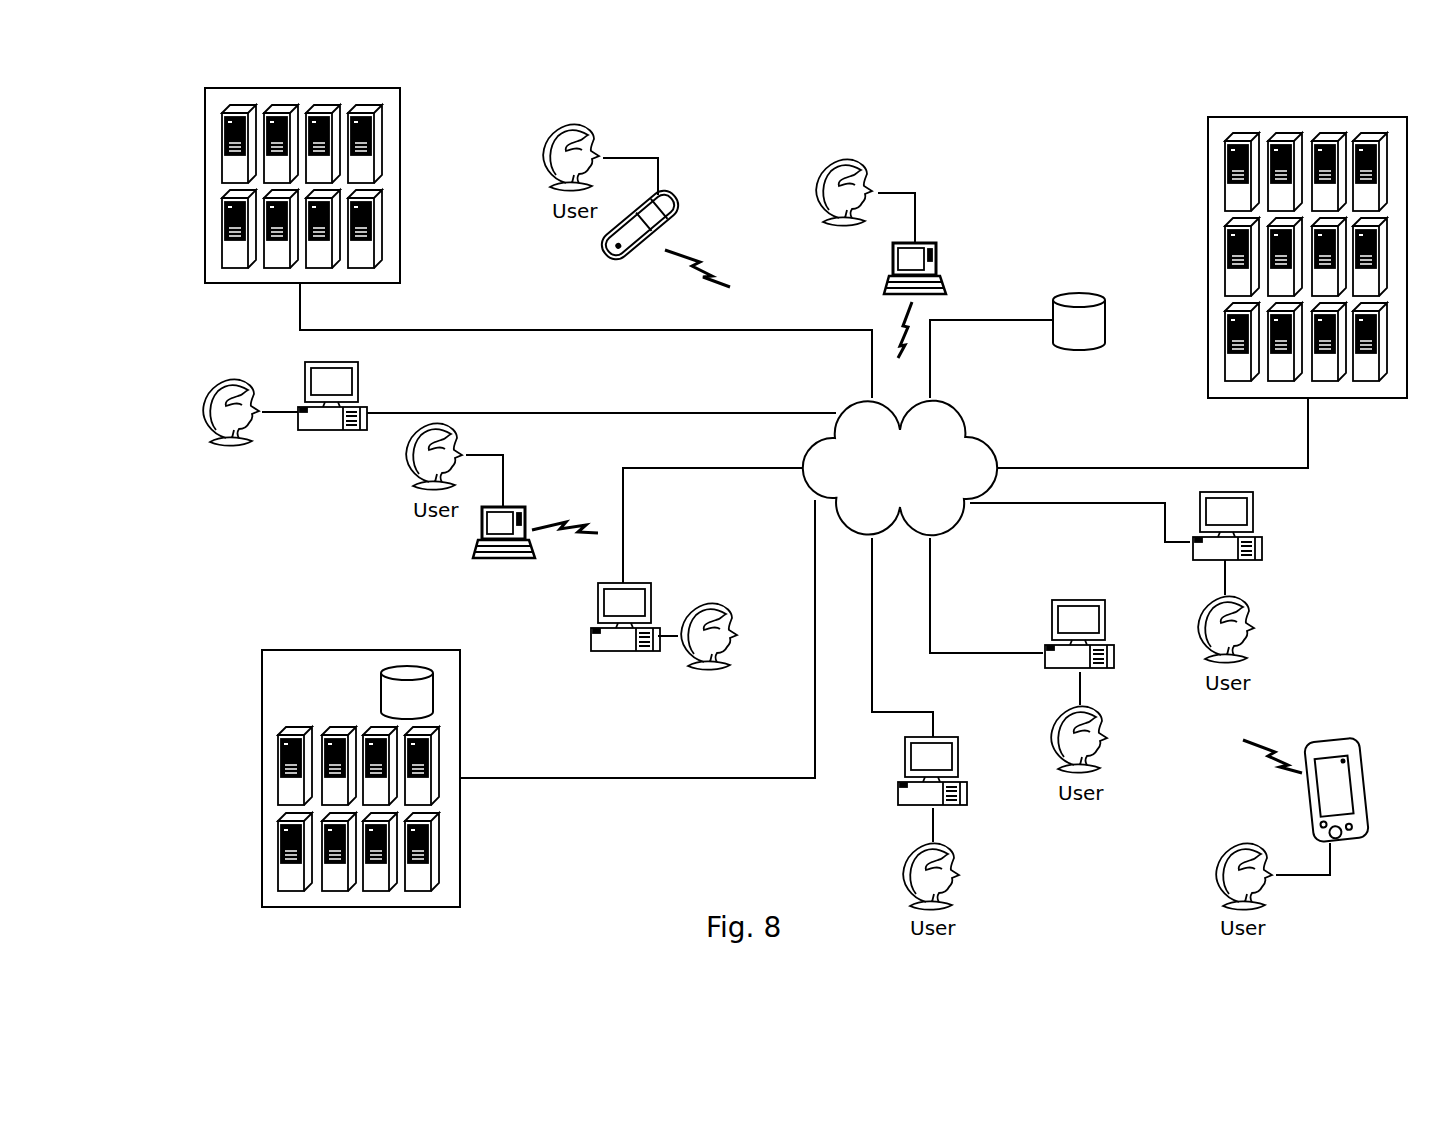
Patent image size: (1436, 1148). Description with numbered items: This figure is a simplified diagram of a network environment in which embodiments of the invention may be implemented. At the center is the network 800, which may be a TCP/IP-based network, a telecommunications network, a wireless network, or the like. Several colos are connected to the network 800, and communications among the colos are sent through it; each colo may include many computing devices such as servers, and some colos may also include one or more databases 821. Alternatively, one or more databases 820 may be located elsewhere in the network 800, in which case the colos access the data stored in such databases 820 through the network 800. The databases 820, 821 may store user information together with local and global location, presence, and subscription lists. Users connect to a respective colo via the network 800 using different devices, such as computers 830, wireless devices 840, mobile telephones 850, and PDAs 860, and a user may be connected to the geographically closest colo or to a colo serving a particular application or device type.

The network 800 is at (970, 435).
The databases 820 is at (1076, 296).
The databases 821 is at (406, 666).
The computers 830 is at (587, 637).
The wireless devices 840 is at (892, 272).
The mobile telephones 850 is at (605, 250).
The PDAs 860 is at (1323, 735).